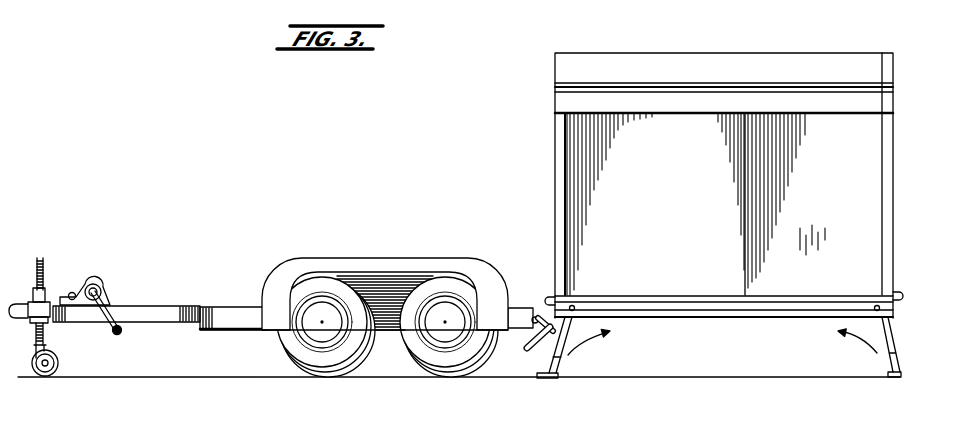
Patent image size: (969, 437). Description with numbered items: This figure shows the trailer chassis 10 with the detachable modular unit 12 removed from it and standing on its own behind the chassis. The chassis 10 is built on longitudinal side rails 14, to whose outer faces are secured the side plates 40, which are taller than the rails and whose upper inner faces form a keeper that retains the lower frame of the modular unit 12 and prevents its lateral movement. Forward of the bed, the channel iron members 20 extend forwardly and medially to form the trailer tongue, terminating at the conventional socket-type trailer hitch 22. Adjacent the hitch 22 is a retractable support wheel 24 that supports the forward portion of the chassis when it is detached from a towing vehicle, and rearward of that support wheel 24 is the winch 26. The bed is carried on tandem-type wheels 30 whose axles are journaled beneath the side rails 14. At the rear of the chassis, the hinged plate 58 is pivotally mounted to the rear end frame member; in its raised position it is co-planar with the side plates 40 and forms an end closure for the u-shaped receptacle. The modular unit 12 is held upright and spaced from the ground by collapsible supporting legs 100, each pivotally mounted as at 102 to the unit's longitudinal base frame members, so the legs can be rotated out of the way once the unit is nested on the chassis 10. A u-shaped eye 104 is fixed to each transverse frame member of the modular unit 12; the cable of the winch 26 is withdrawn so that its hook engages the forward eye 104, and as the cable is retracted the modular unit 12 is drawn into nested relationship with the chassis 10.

The trailer chassis 10 is at (385, 320).
The modular body unit 12 is at (549, 143).
The longitudinal side rails 14 is at (232, 331).
The channel iron members 20 is at (180, 305).
The trailer hitch 22 is at (19, 300).
The retractable support wheel 24 is at (47, 297).
The winch 26 is at (108, 280).
The tandem-type wheels 30 is at (357, 363).
The side plates 40 is at (240, 307).
The hinged plate 58 is at (540, 316).
The collapsible supporting legs 100 is at (562, 358).
The pivot mounting 102 is at (572, 306).
The u-shaped eye 104 is at (548, 295).